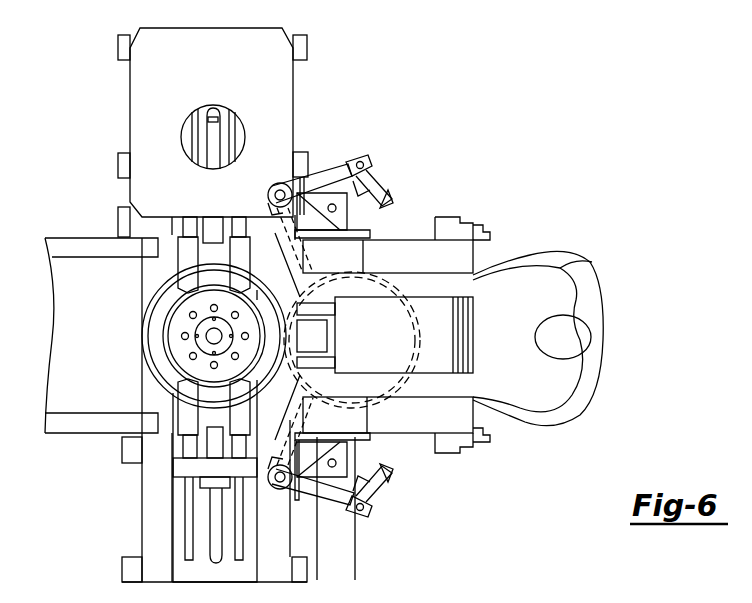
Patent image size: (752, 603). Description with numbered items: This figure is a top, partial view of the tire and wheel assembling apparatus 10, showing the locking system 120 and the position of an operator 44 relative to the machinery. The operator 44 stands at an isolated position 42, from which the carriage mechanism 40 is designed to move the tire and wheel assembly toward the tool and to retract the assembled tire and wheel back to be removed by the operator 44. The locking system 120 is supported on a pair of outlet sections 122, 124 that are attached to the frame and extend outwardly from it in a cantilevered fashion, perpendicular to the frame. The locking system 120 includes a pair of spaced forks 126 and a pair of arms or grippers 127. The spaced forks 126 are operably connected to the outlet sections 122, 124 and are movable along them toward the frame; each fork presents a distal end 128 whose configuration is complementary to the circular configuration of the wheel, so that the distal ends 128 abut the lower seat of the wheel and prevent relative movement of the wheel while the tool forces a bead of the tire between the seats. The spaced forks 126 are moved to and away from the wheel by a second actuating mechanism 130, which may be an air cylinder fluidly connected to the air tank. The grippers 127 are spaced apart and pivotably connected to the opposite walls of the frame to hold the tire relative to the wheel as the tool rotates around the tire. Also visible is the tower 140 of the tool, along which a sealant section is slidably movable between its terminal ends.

The apparatus 10 is at (432, 112).
The carriage mechanism 40 is at (130, 332).
The isolated position 42 is at (487, 244).
The operator 44 is at (598, 283).
The locking system 120 is at (406, 178).
The outlet section 122 is at (298, 150).
The outlet section 124 is at (152, 546).
The spaced forks 126 is at (183, 252).
The arms or grippers 127 is at (352, 160).
The distal end 128 is at (240, 290).
The second actuating mechanism 130 is at (215, 152).
The tower 140 is at (477, 412).